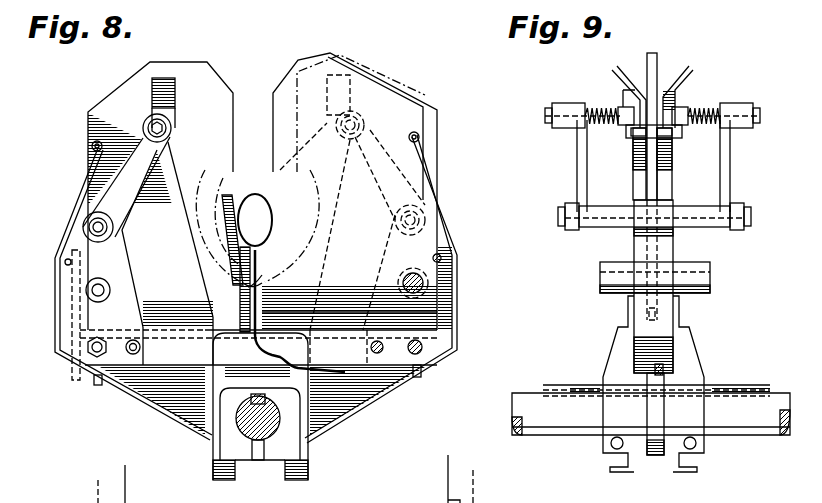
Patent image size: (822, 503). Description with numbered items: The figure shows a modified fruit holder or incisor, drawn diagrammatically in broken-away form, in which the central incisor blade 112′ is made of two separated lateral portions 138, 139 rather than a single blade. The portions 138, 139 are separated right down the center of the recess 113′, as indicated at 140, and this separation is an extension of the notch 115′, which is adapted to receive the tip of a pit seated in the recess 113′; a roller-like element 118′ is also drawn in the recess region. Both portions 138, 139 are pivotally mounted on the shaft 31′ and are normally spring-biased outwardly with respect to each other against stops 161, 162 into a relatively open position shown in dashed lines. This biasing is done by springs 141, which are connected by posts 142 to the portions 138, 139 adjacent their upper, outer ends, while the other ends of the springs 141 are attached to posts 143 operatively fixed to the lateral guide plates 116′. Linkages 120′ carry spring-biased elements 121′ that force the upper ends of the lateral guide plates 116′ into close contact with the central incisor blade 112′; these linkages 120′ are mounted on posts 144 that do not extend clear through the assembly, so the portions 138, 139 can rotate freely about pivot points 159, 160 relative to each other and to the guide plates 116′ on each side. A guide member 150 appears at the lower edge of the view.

In FIG. 8, the central incisor blade 112′ is at (249, 72).
In FIG. 8, the recess 113′ is at (253, 185).
In FIG. 8, the notch 115′ is at (240, 272).
In FIG. 8, the lateral guide plates 116′ is at (182, 228).
In FIG. 9, the lateral guide plates 116′ is at (612, 72).
In FIG. 8, the roller 118′ is at (225, 213).
In FIG. 8, the linkages 120′ is at (115, 180).
In FIG. 9, the linkages 120′ is at (578, 175).
In FIG. 9, the spring-biased elements 121′ is at (618, 112).
In FIG. 8, the portion of central incisor blade 138 is at (140, 88).
In FIG. 8, the portion of central incisor blade 139 is at (368, 85).
In FIG. 9, the portion of central incisor blade 139 is at (655, 58).
In FIG. 8, the separation 140 is at (262, 282).
In FIG. 8, the springs 141 is at (73, 192).
In FIG. 9, the springs 141 is at (637, 160).
In FIG. 8, the posts 142 is at (94, 143).
In FIG. 9, the posts 142 is at (668, 140).
In FIG. 8, the posts 143 is at (97, 385).
In FIG. 9, the posts 143 is at (662, 372).
In FIG. 8, the posts 144 is at (90, 226).
In FIG. 9, the posts 144 is at (745, 215).
In FIG. 8, the guide rod 150 is at (122, 488).
In FIG. 8, the pivot point 159 is at (93, 291).
In FIG. 8, the pivot point 160 is at (425, 286).
In FIG. 9, the pivot point 160 is at (700, 280).
In FIG. 8, the stop 161 is at (62, 270).
In FIG. 8, the stop 162 is at (440, 256).
In FIG. 9, the stop 162 is at (672, 242).
In FIG. 8, the shaft 31′ is at (245, 412).
In FIG. 9, the shaft 31′ is at (570, 418).